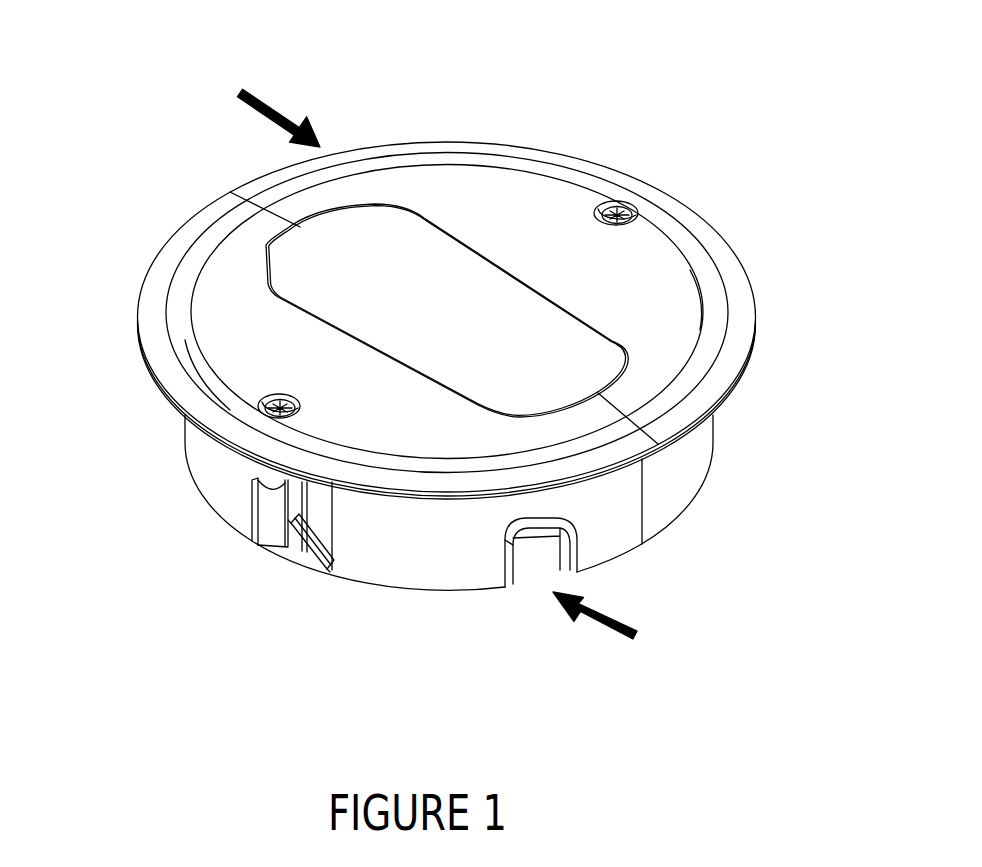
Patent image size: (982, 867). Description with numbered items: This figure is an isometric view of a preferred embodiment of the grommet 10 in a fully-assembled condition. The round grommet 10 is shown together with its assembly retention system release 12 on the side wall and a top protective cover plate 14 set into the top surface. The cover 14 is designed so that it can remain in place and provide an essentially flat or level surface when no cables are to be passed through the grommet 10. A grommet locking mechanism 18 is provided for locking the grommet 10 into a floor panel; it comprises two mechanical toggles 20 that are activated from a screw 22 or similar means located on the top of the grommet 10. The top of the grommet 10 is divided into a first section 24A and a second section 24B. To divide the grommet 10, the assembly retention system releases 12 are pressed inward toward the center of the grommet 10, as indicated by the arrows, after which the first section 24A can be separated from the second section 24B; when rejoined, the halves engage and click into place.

The grommet 10 is at (556, 83).
The assembly retention system release 12 is at (543, 557).
The top protective cover plate 14 is at (300, 263).
The grommet locking mechanism 18 is at (263, 542).
The mechanical toggle 20 is at (307, 540).
The screw 22 is at (300, 407).
The first section 24A is at (230, 353).
The second section 24B is at (677, 313).